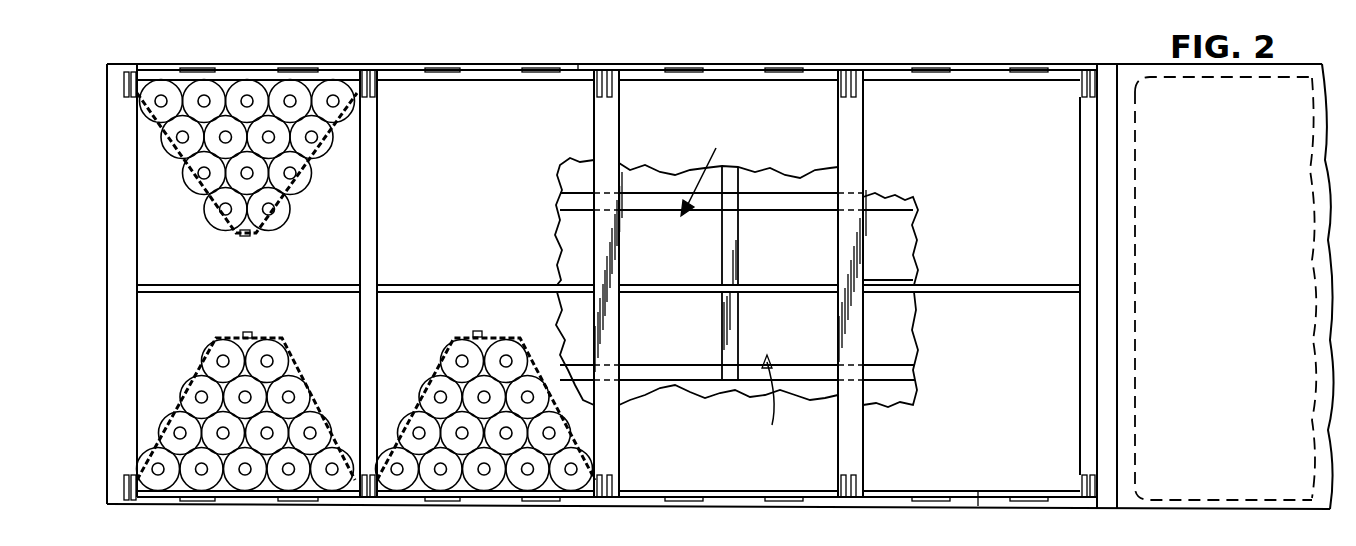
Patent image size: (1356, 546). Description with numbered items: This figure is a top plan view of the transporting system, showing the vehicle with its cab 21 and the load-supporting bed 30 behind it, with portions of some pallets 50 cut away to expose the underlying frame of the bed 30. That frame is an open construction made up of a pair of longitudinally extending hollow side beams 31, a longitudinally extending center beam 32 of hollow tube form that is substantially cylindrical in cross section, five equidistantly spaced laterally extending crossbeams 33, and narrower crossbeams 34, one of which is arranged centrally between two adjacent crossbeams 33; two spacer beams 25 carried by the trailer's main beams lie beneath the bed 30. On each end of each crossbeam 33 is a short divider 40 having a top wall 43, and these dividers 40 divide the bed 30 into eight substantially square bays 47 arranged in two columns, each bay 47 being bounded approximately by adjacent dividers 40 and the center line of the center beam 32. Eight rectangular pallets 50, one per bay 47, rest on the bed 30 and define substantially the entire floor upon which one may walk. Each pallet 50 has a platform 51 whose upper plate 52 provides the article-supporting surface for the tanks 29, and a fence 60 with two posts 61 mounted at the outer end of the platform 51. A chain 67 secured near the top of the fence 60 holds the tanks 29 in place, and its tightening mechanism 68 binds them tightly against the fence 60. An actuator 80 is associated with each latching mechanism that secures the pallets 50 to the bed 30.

The cab 21 is at (1243, 485).
The spacer beam 25 is at (770, 200).
The tank 29 is at (289, 100).
The load-supporting bed 30 is at (172, 502).
The side beam 31 is at (391, 68).
The center beam 32 is at (652, 284).
The crossbeam 33 is at (372, 145).
The crossbeam 34 is at (738, 250).
The divider 40 is at (131, 72).
The top wall 43 is at (640, 521).
The bay 47 is at (727, 283).
The pallet 50 is at (476, 70).
The platform 51 is at (523, 88).
The upper plate 52 is at (790, 521).
The fence 60 is at (578, 72).
The post 61 is at (721, 521).
The chain 67 is at (268, 234).
The tightening mechanism 68 is at (244, 236).
The actuator 80 is at (785, 70).